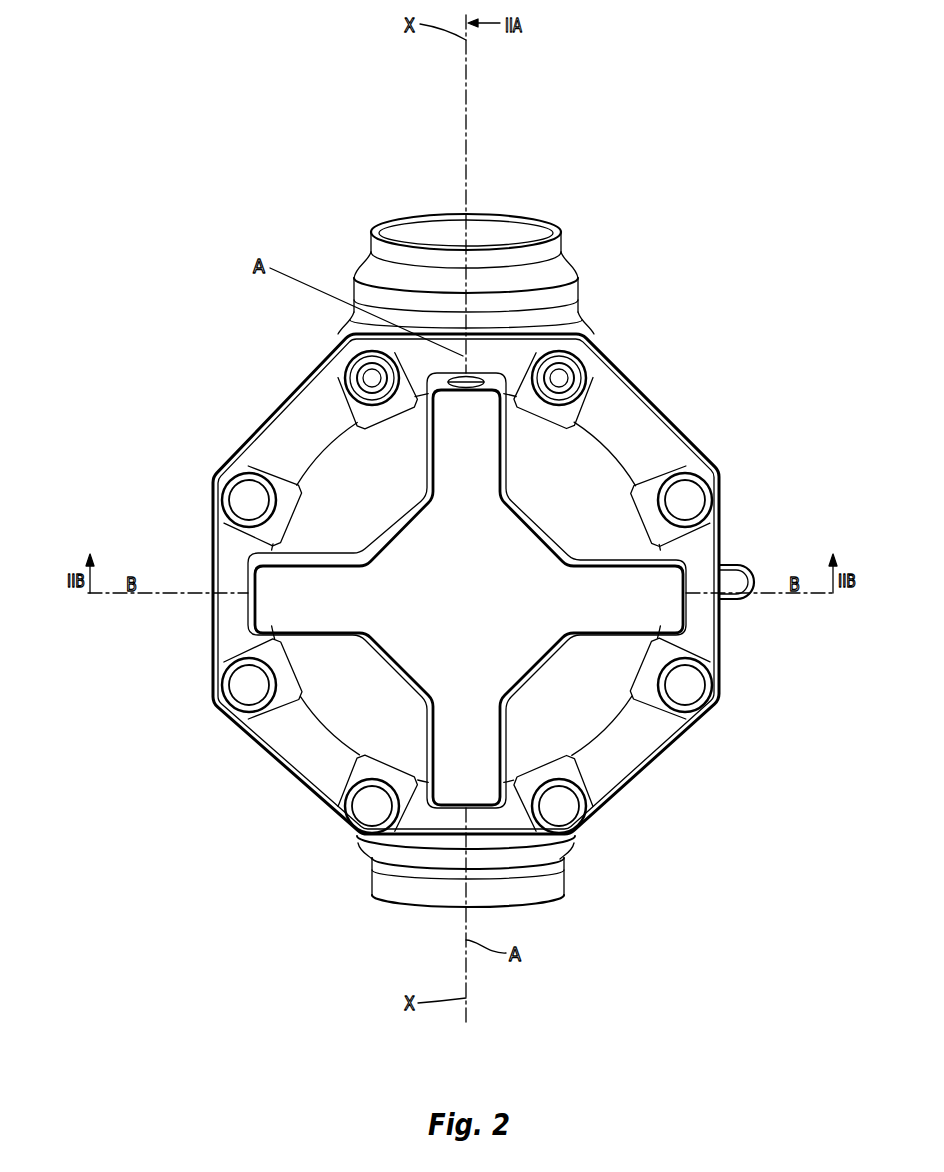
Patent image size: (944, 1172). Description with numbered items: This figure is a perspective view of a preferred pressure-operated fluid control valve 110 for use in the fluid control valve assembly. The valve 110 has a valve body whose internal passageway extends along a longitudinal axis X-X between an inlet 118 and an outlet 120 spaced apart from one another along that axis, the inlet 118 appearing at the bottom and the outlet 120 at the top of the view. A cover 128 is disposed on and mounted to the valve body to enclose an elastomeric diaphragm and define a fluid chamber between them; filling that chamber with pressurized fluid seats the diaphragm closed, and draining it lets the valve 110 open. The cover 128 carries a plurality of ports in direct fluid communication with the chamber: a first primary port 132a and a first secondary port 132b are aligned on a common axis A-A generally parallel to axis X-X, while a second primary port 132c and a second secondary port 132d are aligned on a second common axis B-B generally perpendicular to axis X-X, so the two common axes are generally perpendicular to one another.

The pressure-operated fluid control valve 110 is at (692, 304).
The inlet 118 is at (542, 930).
The outlet 120 is at (350, 143).
The cover 128 is at (612, 420).
The primary port 132a is at (400, 377).
The secondary port 132b is at (393, 823).
The primary port 132c is at (252, 585).
The secondary port 132d is at (726, 565).